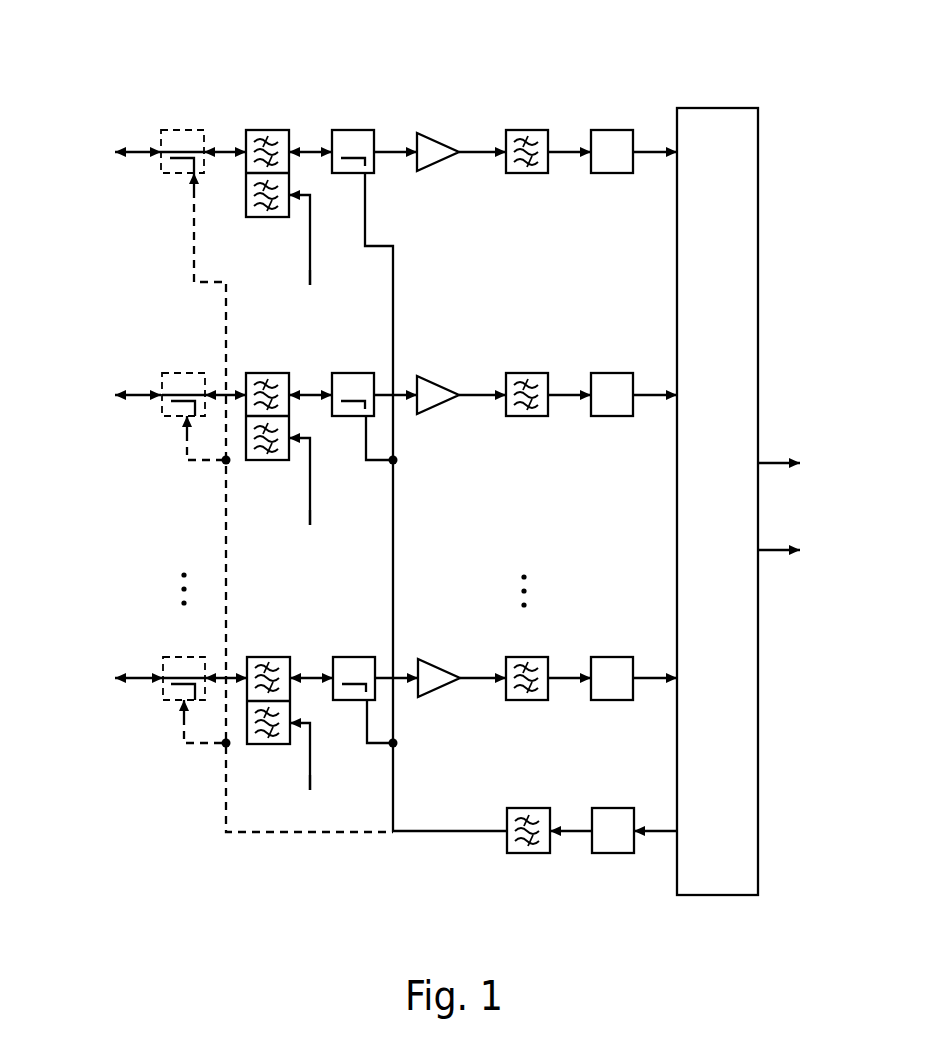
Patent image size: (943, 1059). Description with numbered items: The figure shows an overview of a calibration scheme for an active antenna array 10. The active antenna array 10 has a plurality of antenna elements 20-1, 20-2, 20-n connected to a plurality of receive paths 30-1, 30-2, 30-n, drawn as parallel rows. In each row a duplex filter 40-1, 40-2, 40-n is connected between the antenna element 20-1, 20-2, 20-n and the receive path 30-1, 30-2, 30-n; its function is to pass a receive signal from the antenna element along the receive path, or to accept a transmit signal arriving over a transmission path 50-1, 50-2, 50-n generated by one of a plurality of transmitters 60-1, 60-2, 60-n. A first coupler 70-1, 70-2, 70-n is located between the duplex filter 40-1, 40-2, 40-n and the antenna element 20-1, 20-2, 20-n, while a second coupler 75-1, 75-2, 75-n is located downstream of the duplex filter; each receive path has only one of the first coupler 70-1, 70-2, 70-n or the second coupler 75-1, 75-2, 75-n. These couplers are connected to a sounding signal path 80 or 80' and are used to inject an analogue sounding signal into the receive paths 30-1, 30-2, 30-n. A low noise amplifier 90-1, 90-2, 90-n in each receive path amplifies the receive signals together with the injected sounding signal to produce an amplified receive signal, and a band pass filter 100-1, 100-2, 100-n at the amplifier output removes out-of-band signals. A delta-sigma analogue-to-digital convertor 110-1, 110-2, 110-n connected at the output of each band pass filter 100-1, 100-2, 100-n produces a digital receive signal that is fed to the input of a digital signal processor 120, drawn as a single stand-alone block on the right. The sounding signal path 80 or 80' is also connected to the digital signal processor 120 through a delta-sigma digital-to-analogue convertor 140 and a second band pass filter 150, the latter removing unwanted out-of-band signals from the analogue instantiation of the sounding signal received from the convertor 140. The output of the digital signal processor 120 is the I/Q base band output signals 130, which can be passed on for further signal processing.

The active antenna array 10 is at (117, 82).
The antenna element 20-1 is at (111, 153).
The antenna element 20-2 is at (111, 396).
The antenna element 20-n is at (112, 679).
The first coupler 70-1 is at (182, 142).
The first coupler 70-2 is at (184, 386).
The first coupler 70-n is at (185, 669).
The duplex filter 40-1 is at (279, 120).
The duplex filter 40-2 is at (279, 365).
The duplex filter 40-n is at (281, 643).
The receive path 30-1 is at (378, 153).
The receive path 30-2 is at (386, 403).
The receive path 30-n is at (390, 689).
The second coupler 75-1 is at (372, 168).
The second coupler 75-2 is at (374, 412).
The second coupler 75-n is at (376, 695).
The low noise amplifier 90-1 is at (461, 132).
The low noise amplifier 90-2 is at (461, 376).
The low noise amplifier 90-n is at (461, 659).
The band pass filter 100-1 is at (547, 133).
The band pass filter 100-2 is at (546, 377).
The band pass filter 100-n is at (547, 660).
The delta-sigma analogue-to-digital convertor 110-1 is at (629, 133).
The delta-sigma analogue-to-digital convertor 110-2 is at (629, 377).
The delta-sigma analogue-to-digital convertor 110-n is at (630, 660).
The transmission path 50-1 is at (338, 256).
The transmission path 50-2 is at (339, 500).
The transmission path 50-n is at (338, 772).
The transmitter 60-1 is at (311, 294).
The transmitter 60-2 is at (315, 536).
The transmitter 60-n is at (311, 798).
The sounding signal path 80 is at (436, 534).
The sounding signal path 80' is at (288, 542).
The digital signal processor 120 is at (717, 501).
The I/Q base band output signals 130 is at (799, 506).
The delta-sigma digital-to-analogue convertor 140 is at (634, 814).
The second band pass filter 150 is at (549, 814).